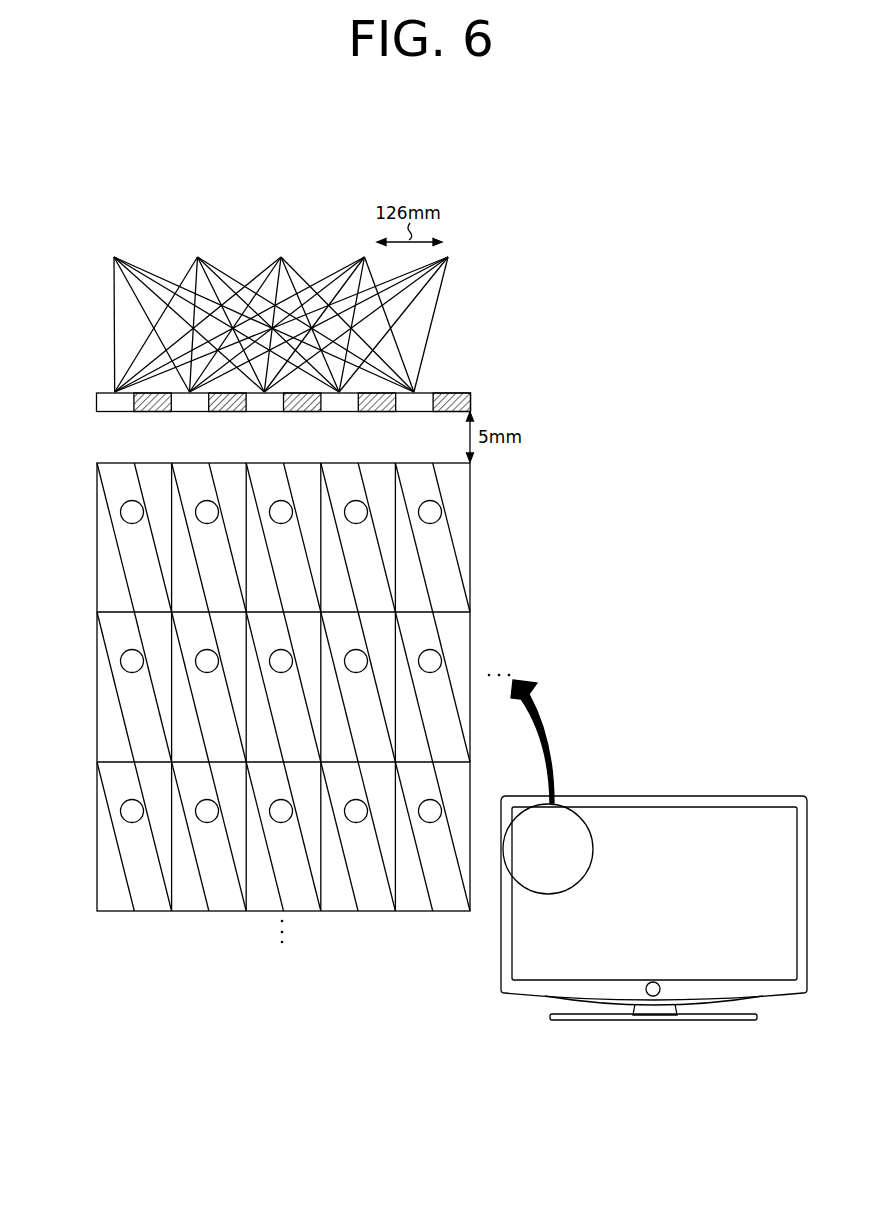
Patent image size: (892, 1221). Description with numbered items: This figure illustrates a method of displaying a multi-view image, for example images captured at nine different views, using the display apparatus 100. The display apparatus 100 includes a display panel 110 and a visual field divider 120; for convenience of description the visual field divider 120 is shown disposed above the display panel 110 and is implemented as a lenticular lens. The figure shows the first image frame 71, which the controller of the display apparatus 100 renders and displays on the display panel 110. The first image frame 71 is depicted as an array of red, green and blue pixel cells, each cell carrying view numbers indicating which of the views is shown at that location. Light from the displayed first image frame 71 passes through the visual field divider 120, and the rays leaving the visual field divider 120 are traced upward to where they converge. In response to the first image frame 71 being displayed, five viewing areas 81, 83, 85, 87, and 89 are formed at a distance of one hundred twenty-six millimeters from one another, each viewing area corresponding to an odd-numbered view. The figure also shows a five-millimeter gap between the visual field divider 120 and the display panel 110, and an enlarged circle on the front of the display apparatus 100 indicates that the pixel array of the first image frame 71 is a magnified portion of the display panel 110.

The viewing area 81 is at (448, 228).
The viewing area 83 is at (365, 228).
The viewing area 85 is at (281, 228).
The viewing area 87 is at (197, 228).
The viewing area 89 is at (114, 228).
The visual field divider 120 is at (97, 401).
The first image frame 71 is at (97, 648).
The display apparatus 100 is at (657, 793).
The display panel 110 is at (717, 806).